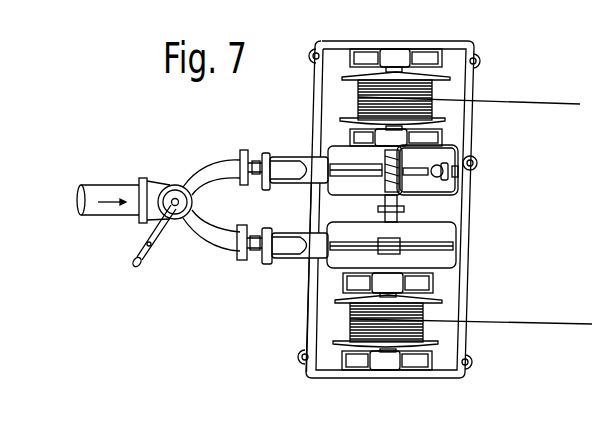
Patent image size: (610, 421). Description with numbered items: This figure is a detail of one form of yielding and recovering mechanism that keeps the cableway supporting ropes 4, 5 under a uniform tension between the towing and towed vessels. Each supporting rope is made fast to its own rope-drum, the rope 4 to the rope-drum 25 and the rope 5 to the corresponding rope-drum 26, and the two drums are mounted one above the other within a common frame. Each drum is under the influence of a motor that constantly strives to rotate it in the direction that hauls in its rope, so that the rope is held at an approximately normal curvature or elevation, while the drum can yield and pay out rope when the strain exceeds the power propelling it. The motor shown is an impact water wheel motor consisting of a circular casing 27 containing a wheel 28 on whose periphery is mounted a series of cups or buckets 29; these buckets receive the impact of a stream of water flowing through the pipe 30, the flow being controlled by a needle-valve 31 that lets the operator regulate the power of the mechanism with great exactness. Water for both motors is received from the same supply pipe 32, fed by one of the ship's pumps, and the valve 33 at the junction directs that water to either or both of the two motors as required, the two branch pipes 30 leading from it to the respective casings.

The supporting rope 4 is at (521, 102).
The supporting rope 5 is at (513, 321).
The rope-drum 25 is at (359, 108).
The rope-drum 26 is at (353, 331).
The circular casing 27 is at (457, 153).
The wheel 28 is at (415, 178).
The cups or buckets 29 is at (440, 178).
The pipe 30 is at (297, 160).
The needle-valve 31 is at (299, 168).
The pipe 32 is at (132, 211).
The valve 33 is at (175, 198).